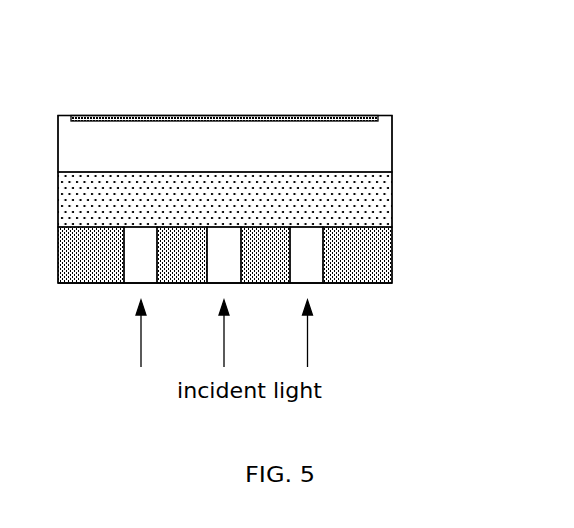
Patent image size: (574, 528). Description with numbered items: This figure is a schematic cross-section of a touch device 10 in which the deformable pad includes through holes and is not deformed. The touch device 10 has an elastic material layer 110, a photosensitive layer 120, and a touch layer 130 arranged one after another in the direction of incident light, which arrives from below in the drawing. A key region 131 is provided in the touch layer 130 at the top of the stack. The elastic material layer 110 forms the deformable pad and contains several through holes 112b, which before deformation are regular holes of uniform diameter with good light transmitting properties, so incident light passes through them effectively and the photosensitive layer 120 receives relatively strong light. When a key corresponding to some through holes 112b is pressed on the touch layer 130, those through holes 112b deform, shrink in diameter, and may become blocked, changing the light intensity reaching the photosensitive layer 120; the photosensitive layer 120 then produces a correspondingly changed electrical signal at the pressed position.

The touch device 10 is at (279, 95).
The elastic material layer 110 is at (387, 244).
The through hole 112b is at (307, 263).
The photosensitive layer 120 is at (363, 195).
The touch layer 130 is at (363, 138).
The key region 131 is at (332, 116).